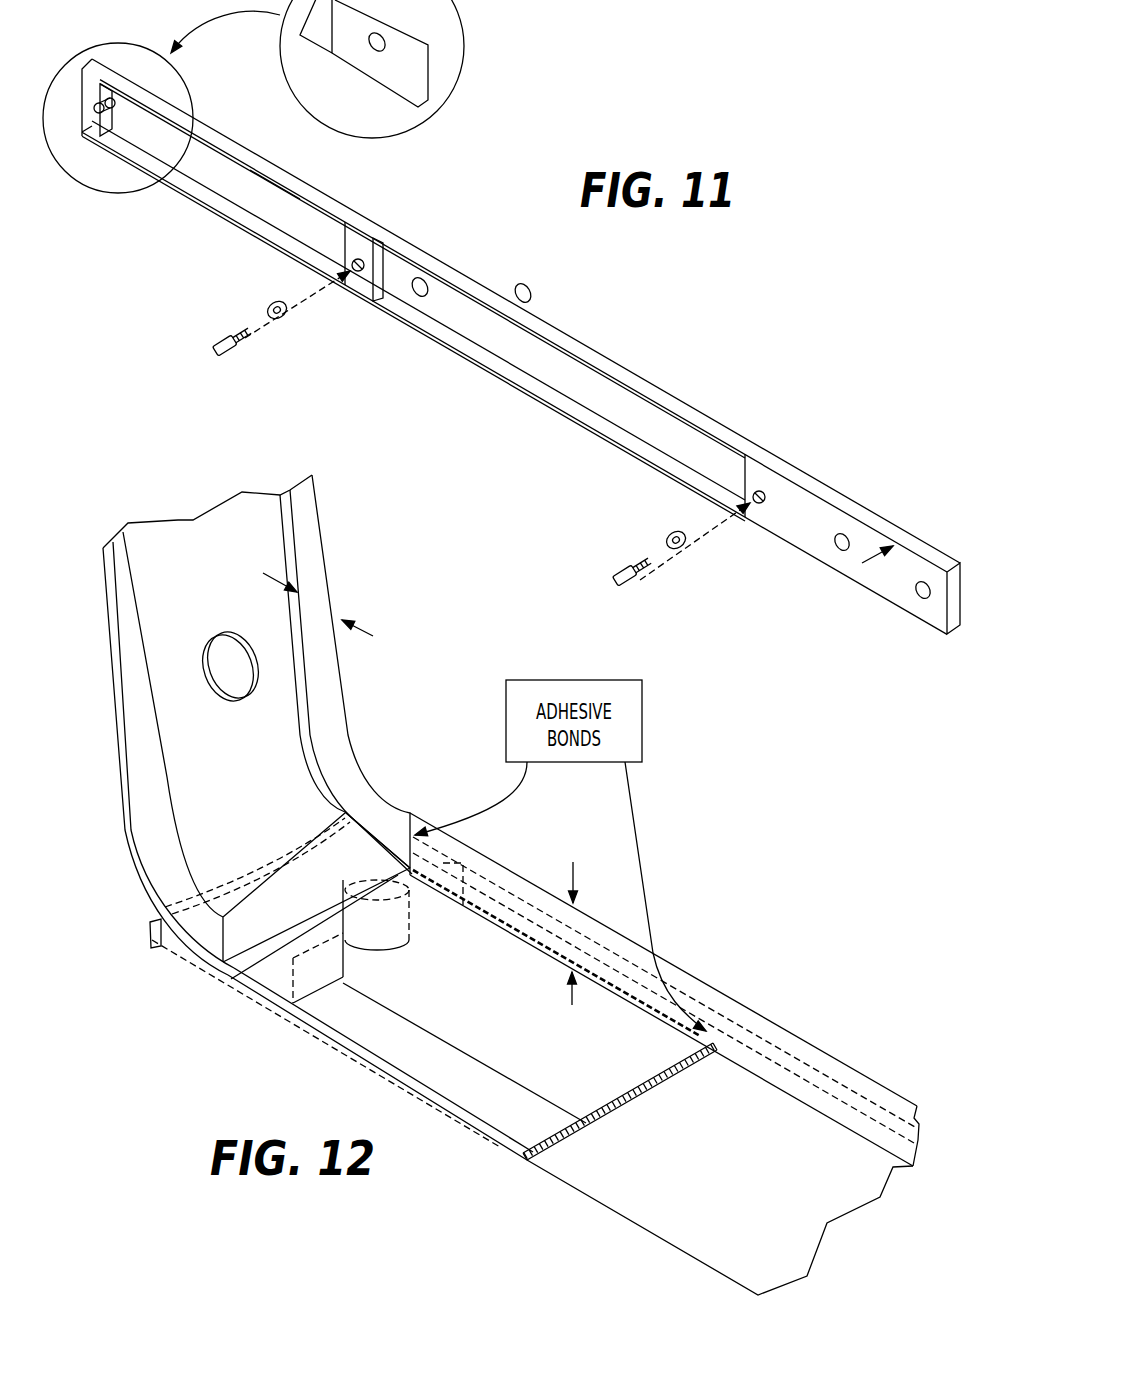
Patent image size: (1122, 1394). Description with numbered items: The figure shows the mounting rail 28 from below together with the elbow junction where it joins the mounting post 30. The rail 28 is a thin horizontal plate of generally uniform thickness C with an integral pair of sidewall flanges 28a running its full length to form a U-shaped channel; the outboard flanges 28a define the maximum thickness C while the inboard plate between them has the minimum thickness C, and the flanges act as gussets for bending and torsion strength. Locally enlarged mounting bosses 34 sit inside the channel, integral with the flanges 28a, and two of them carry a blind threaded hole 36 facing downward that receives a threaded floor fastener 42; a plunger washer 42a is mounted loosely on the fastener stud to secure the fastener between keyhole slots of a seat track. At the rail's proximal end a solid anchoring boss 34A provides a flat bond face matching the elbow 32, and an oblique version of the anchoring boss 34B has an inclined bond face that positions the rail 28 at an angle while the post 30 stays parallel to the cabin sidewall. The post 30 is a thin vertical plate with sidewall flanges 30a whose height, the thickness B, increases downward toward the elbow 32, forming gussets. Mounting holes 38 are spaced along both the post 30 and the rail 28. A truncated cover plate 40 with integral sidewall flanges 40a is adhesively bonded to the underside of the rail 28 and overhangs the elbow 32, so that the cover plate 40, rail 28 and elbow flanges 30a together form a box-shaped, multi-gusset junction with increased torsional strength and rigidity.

In FIG. 11, the mounting rail 28 is at (386, 96).
In FIG. 12, the mounting rail 28 is at (840, 1082).
In FIG. 11, the sidewall flanges of the rail 28a is at (683, 428).
In FIG. 12, the sidewall flanges of the rail 28a is at (487, 927).
In FIG. 12, the mounting post 30 is at (323, 548).
In FIG. 12, the sidewall flanges of the post 30a is at (120, 788).
In FIG. 12, the elbow 32 is at (372, 774).
In FIG. 11, the mounting boss 34 is at (356, 243).
In FIG. 11, the anchoring boss 34A is at (90, 132).
In FIG. 12, the anchoring boss 34A is at (270, 973).
In FIG. 11, the anchoring boss (oblique version) 34B is at (312, 53).
In FIG. 11, the threaded hole 36 is at (358, 258).
In FIG. 12, the mounting holes 38 is at (220, 645).
In FIG. 12, the cover plate 40 is at (683, 1197).
In FIG. 12, the sidewall flanges of the cover plate 40a is at (725, 1042).
In FIG. 11, the floor fastener 42 is at (236, 348).
In FIG. 11, the plunger washer 42a is at (272, 302).
In FIG. 12, the thickness of the post B is at (350, 625).
In FIG. 11, the thickness of the rail C is at (922, 530).
In FIG. 12, the thickness of the rail C is at (573, 870).